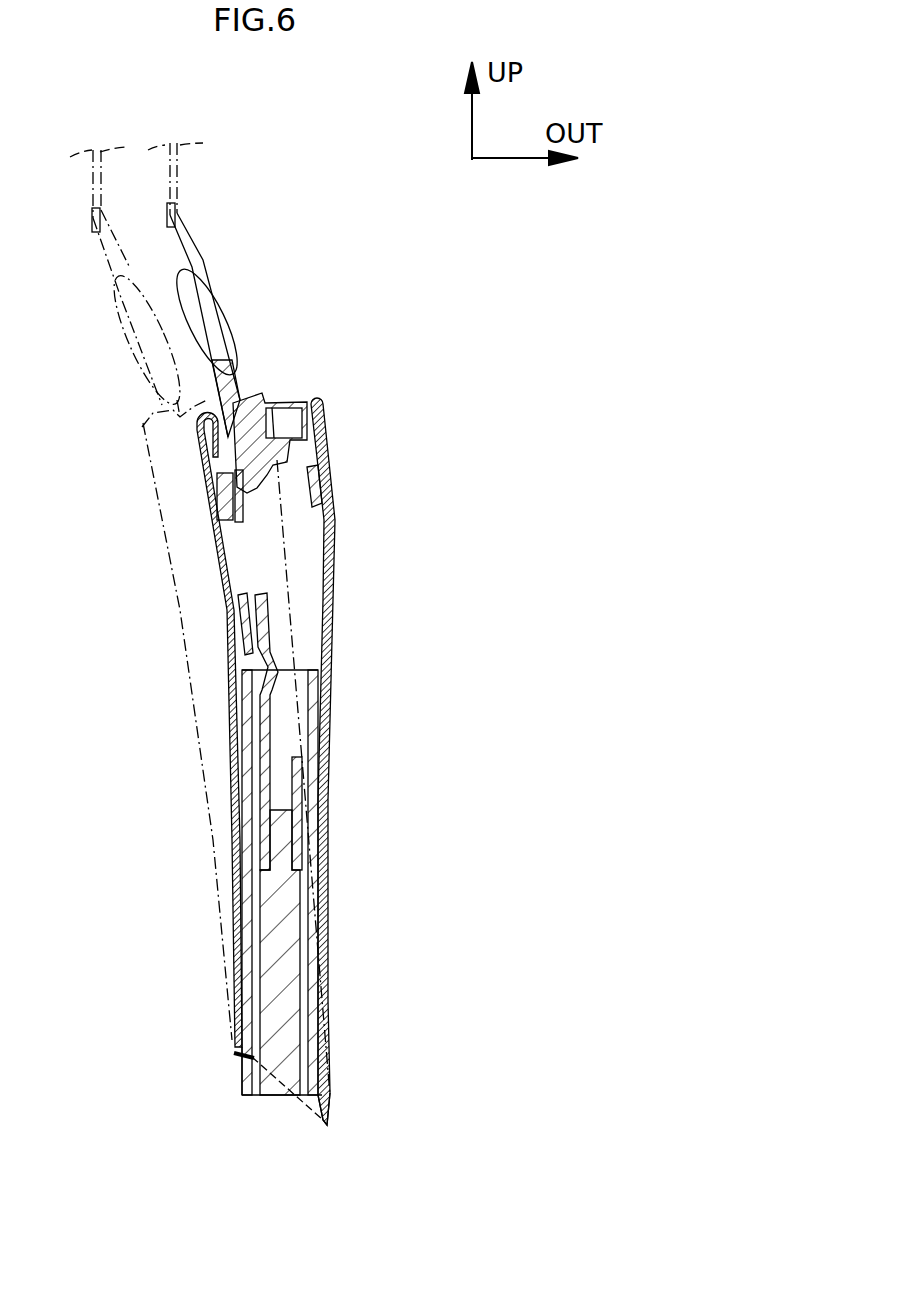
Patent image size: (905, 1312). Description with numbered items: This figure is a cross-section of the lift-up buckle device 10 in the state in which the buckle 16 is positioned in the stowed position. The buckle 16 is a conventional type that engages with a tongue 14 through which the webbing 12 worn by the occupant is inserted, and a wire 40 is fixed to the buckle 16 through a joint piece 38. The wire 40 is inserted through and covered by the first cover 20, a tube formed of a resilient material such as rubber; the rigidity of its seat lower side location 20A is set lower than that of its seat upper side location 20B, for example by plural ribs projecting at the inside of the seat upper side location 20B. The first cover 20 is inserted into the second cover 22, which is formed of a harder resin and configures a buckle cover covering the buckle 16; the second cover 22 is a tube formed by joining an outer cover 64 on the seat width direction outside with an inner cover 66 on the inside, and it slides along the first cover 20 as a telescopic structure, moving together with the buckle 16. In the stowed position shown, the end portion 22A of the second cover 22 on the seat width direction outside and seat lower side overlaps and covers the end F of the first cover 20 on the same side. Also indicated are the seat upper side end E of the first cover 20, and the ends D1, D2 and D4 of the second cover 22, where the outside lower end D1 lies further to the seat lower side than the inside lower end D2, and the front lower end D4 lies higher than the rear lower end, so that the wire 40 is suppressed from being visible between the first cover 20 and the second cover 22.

The lift-up buckle device 10 is at (445, 308).
The webbing 12 is at (182, 177).
The tongue 14 is at (225, 333).
The buckle 16 is at (300, 545).
The first cover 20 is at (236, 1073).
The seat lower side location 20A is at (240, 1087).
The seat upper side location 20B is at (320, 767).
The second cover 22 is at (342, 572).
The end portion of the second cover 22A is at (330, 1087).
The joint piece 38 is at (275, 735).
The wire 40 is at (273, 1097).
The outer cover 64 is at (330, 623).
The inner cover 66 is at (236, 608).
The seat upper side end of the first cover E is at (236, 657).
The end of the first cover F is at (337, 1110).
The end of the second cover on the seat width direction outside and seat lower side D1 is at (307, 1105).
The end of the second cover on the seat width direction inside and seat lower side D2 is at (233, 1056).
The end of the second cover on the seat front side and seat lower side D4 is at (307, 1103).